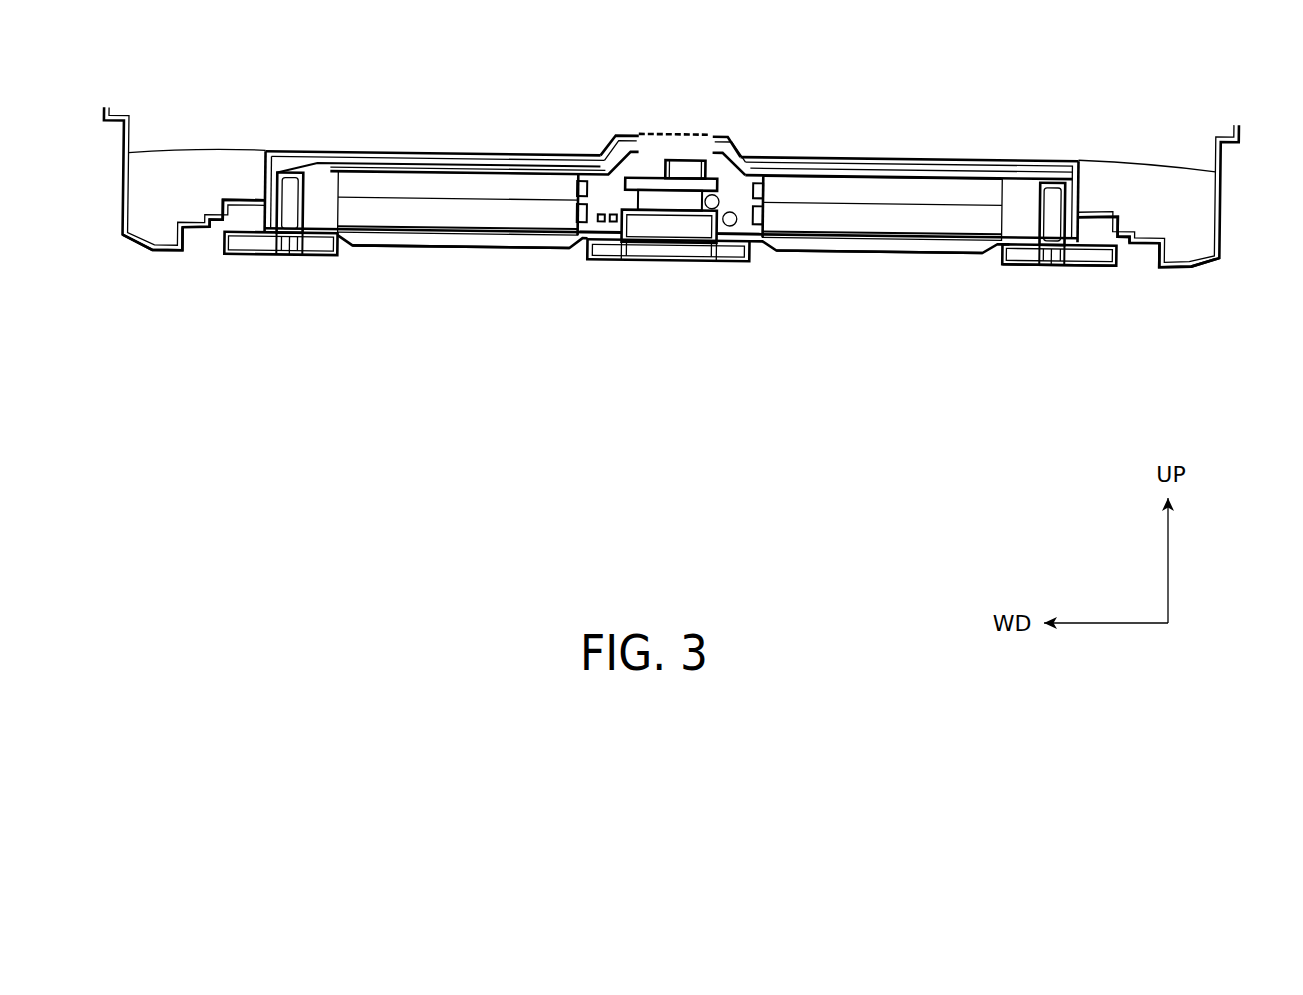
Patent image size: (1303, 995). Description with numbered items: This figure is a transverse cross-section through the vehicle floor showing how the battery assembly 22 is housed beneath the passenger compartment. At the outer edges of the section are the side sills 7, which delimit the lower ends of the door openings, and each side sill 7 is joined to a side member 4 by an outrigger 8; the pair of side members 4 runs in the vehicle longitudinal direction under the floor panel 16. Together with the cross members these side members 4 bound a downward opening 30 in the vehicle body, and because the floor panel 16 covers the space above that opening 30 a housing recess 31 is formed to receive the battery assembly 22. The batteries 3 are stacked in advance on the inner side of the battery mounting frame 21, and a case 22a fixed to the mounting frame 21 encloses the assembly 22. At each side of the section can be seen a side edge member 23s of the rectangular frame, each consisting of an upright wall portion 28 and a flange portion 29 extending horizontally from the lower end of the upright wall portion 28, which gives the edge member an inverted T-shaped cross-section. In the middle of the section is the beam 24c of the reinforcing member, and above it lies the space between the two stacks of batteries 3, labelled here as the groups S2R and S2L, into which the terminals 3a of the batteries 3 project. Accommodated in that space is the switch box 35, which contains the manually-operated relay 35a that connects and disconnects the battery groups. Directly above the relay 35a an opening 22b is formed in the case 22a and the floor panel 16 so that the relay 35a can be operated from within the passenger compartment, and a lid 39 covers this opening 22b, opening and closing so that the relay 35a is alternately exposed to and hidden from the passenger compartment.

The battery 3 is at (497, 192).
The terminal 3a is at (764, 210).
The side member 4 is at (220, 217).
The side sill 7 is at (120, 222).
The outrigger 8 is at (173, 161).
The floor panel 16 is at (454, 152).
The battery mounting frame 21 is at (1110, 272).
The battery assembly 22 is at (505, 252).
The case 22a is at (860, 157).
The opening 22b is at (636, 133).
The side edge member 23s is at (294, 268).
The beam 24c is at (670, 262).
The upright wall portion 28 is at (267, 190).
The flange portion 29 is at (233, 263).
The downward opening 30 is at (270, 263).
The housing recess 31 is at (405, 170).
The switch box 35 is at (650, 172).
The manually-operated relay 35a is at (680, 160).
The lid 39 is at (720, 133).
The group of batteries S2R is at (405, 236).
The group of batteries S2L is at (853, 252).